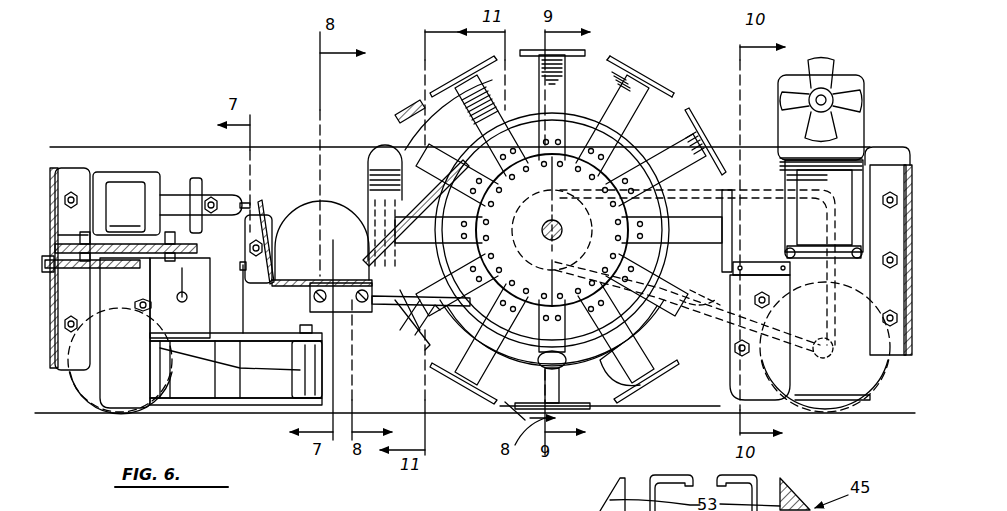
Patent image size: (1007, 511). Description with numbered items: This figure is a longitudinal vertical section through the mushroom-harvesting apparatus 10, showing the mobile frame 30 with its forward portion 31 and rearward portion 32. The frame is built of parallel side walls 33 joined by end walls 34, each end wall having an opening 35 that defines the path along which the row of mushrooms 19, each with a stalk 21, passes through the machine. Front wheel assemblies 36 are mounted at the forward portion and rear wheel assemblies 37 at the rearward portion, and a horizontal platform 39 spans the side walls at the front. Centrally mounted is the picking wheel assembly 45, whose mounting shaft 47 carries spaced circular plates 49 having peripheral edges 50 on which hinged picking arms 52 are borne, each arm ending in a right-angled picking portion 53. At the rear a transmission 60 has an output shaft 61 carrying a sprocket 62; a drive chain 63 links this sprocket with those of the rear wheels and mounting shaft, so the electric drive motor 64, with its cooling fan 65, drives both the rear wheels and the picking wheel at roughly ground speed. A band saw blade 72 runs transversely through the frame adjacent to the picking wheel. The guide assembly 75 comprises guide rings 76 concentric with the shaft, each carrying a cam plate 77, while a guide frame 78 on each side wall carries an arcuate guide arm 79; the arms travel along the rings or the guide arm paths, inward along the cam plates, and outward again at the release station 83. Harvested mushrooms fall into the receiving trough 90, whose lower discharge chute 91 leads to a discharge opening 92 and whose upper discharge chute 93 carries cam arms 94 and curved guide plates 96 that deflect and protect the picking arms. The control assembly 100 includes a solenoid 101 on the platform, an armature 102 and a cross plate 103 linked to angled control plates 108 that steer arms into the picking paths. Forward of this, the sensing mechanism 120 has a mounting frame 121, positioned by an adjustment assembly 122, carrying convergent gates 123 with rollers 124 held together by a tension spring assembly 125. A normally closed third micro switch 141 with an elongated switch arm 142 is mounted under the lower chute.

The apparatus 10 is at (190, 112).
The growths or mushrooms 19 is at (565, 372).
The stalk 21 is at (560, 410).
The mobile frame 30 is at (300, 144).
The forward portion 31 is at (70, 147).
The rearward portion 32 is at (890, 147).
The side walls 33 is at (333, 168).
The end walls 34 is at (50, 190).
The opening 35 is at (912, 283).
The front wheel assemblies 36 is at (72, 384).
The rear wheel assemblies 37 is at (862, 384).
The horizontal platform 39 is at (56, 236).
The picking wheel assembly 45 is at (632, 62).
The mounting shaft 47 is at (563, 229).
The circular plates 49 is at (530, 194).
The peripheral edges 50 is at (566, 118).
The picking arm 52 is at (640, 172).
The grasping or picking portion 53 is at (400, 118).
The transmission 60 is at (850, 228).
The output shaft 61 is at (795, 225).
The sprocket 62 is at (677, 231).
The drive chain 63 is at (772, 190).
The electric drive motor 64 is at (860, 118).
The cooling fan 65 is at (828, 65).
The band saw blade 72 is at (785, 272).
The guide assembly 75 is at (520, 120).
The guide rings 76 is at (470, 150).
The cam plate 77 is at (600, 115).
The guide frame 78 is at (712, 388).
The arcuate guide arm 79 is at (510, 405).
The release station or position 83 is at (470, 63).
The receiving trough 90 is at (340, 275).
The lower discharge chute 91 is at (302, 265).
The discharge opening 92 is at (300, 212).
The upper discharge chute 93 is at (480, 230).
The cam arms 94 is at (470, 90).
The guide plates 96 is at (386, 150).
The control assembly 100 is at (180, 198).
The solenoid 101 is at (128, 180).
The armature 102 is at (178, 200).
The cross plate 103 is at (247, 200).
The angled control plate 108 is at (400, 312).
The mechanism for sensing the maturity of mushrooms 120 is at (228, 406).
The mounting frame 121 is at (60, 300).
The adjustment assembly 122 is at (60, 258).
The gates 123 is at (238, 336).
The roller 124 is at (322, 380).
The tension spring assembly 125 is at (170, 300).
The third micro switch 141 is at (350, 312).
The switch arm 142 is at (432, 318).